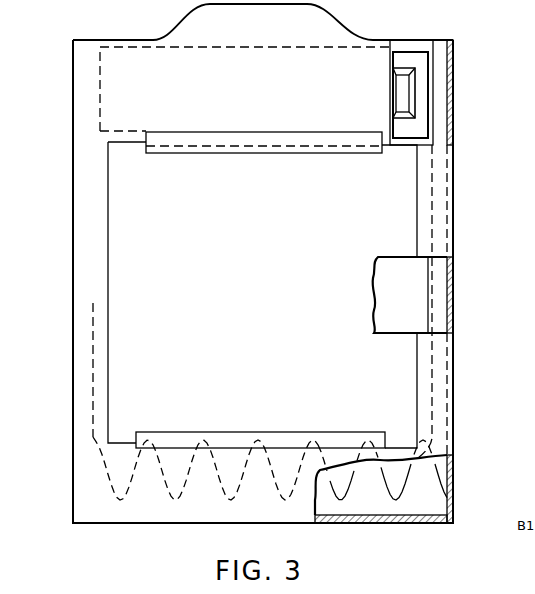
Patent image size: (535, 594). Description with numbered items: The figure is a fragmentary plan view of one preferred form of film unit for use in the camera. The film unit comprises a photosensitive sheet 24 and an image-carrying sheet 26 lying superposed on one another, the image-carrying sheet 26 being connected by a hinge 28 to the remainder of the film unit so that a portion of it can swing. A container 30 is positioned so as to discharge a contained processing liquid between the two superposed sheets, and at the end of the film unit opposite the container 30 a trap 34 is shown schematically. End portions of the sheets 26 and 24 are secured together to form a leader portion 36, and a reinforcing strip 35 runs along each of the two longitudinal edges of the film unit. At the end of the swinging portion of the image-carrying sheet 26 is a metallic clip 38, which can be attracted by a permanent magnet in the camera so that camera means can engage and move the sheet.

The photosensitive sheet 24 is at (407, 320).
The image-carrying sheet 26 is at (264, 295).
The hinge 28 is at (290, 149).
The container 30 is at (417, 58).
The trap 34 is at (205, 482).
The reinforcing strip 35 is at (440, 88).
The leader portion 36 is at (322, 24).
The metallic clip 38 is at (293, 440).